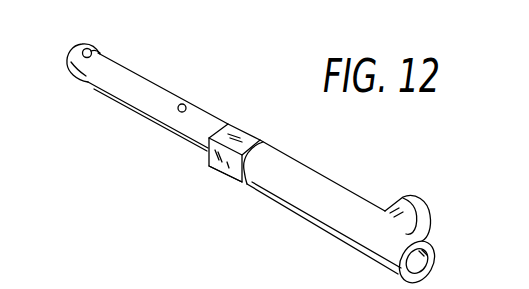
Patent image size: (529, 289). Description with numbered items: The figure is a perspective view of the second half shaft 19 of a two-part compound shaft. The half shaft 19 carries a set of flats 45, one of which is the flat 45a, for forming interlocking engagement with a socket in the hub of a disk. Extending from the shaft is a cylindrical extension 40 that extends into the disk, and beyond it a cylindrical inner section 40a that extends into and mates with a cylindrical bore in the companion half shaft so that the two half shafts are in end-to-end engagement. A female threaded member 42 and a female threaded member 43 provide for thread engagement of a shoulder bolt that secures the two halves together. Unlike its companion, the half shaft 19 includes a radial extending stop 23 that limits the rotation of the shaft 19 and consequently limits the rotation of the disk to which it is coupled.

The second half shaft 19 is at (281, 166).
The radial extending stop 23 is at (403, 196).
The cylindrical extension 40 is at (133, 108).
The cylindrical inner section 40a is at (69, 64).
The female threaded member 42 is at (93, 50).
The female threaded member 43 is at (179, 113).
The set of flats 45 is at (247, 137).
The flat 45a is at (226, 172).